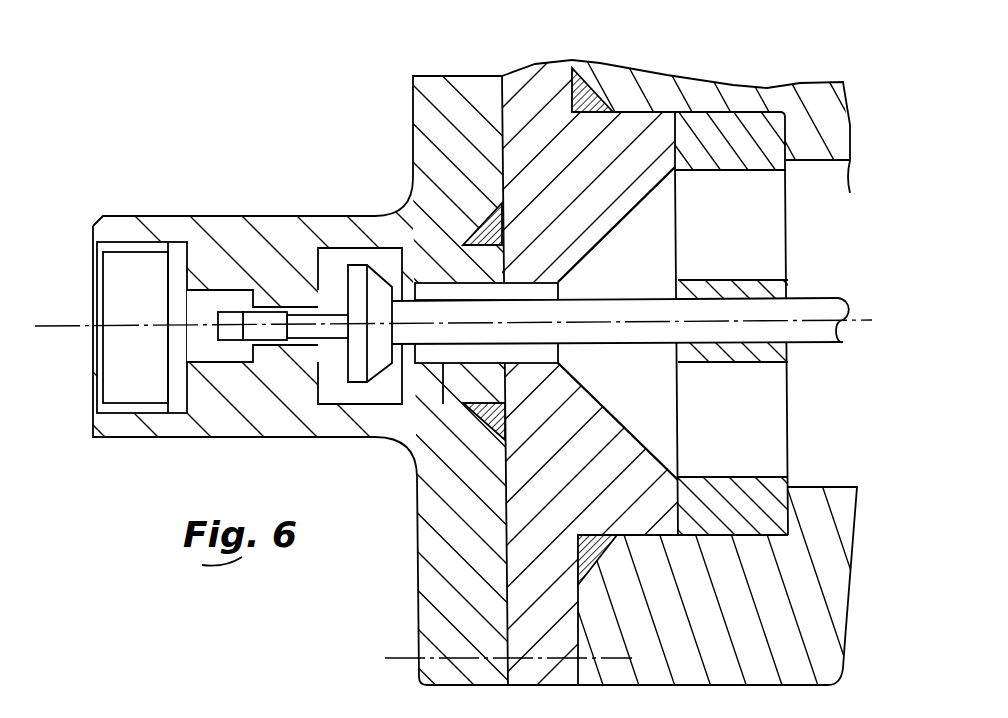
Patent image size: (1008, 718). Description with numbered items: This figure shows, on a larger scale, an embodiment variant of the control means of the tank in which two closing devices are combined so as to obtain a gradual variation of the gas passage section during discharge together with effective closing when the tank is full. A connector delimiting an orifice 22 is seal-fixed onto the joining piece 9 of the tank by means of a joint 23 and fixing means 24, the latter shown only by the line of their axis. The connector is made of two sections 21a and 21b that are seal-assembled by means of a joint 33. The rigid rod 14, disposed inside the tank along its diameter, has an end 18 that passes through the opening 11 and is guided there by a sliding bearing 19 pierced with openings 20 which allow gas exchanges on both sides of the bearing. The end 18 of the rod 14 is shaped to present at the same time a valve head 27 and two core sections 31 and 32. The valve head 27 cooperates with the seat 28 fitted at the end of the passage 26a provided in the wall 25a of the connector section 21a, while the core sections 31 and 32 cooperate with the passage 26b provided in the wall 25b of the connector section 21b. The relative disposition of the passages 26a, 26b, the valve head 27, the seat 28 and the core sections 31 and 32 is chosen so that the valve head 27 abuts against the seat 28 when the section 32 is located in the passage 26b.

The joining piece 9 is at (803, 513).
The opening 11 is at (848, 232).
The rigid rod 14 is at (840, 305).
The end of the rod 18 is at (608, 307).
The sliding bearing 19 is at (757, 130).
The openings 20 is at (745, 427).
The connector section 21a is at (563, 147).
The connector section 21b is at (260, 235).
The orifice 22 is at (142, 294).
The joint 23 is at (578, 558).
The fixing means 24 is at (438, 657).
The wall 25a is at (498, 384).
The wall 25b is at (282, 349).
The passage 26a is at (443, 364).
The passage 26b is at (300, 310).
The valve head 27 is at (348, 266).
The seat 28 is at (407, 367).
The core section 31 is at (265, 341).
The core section 32 is at (232, 311).
The joint 33 is at (486, 242).